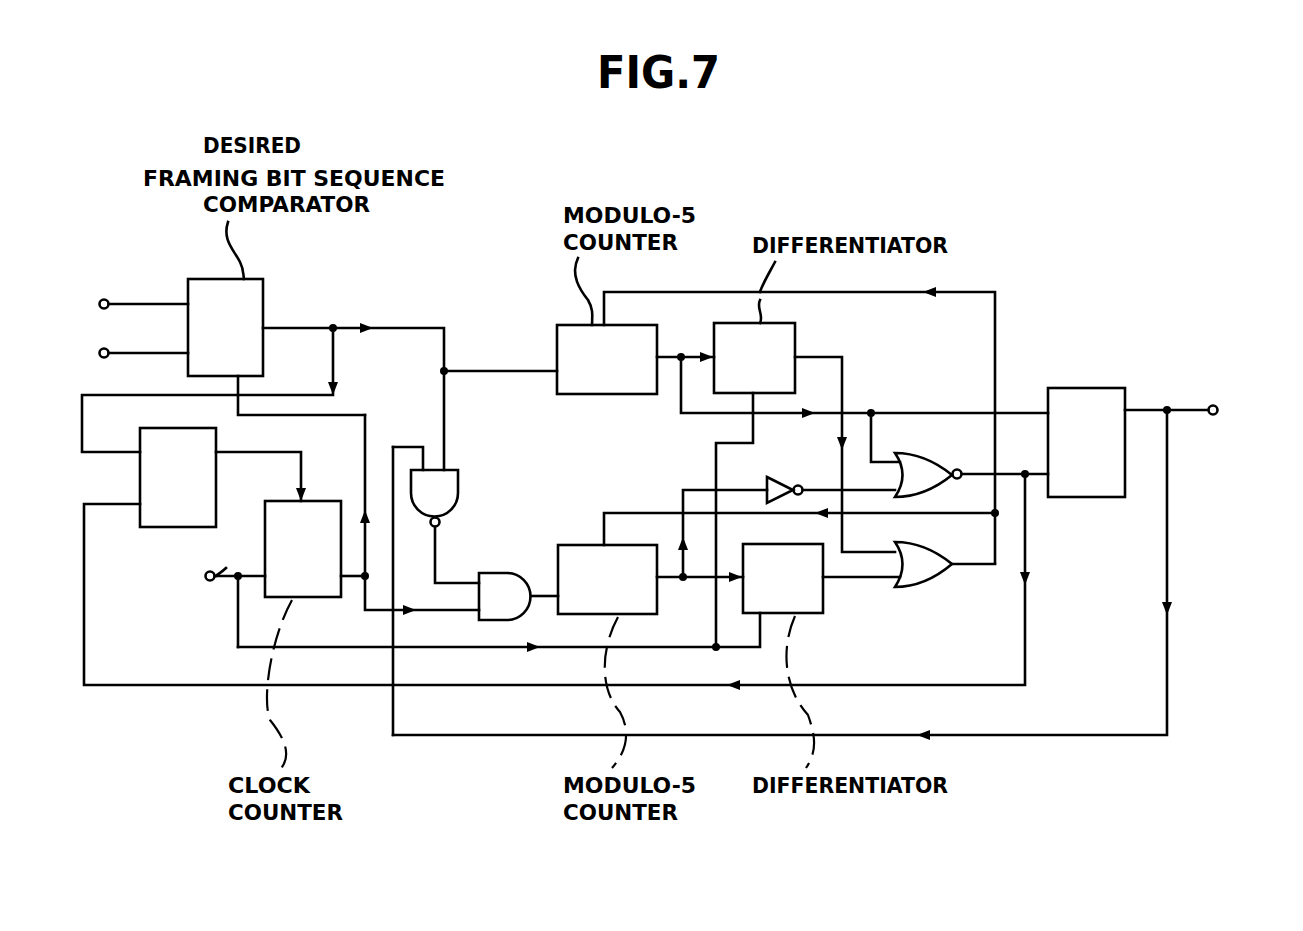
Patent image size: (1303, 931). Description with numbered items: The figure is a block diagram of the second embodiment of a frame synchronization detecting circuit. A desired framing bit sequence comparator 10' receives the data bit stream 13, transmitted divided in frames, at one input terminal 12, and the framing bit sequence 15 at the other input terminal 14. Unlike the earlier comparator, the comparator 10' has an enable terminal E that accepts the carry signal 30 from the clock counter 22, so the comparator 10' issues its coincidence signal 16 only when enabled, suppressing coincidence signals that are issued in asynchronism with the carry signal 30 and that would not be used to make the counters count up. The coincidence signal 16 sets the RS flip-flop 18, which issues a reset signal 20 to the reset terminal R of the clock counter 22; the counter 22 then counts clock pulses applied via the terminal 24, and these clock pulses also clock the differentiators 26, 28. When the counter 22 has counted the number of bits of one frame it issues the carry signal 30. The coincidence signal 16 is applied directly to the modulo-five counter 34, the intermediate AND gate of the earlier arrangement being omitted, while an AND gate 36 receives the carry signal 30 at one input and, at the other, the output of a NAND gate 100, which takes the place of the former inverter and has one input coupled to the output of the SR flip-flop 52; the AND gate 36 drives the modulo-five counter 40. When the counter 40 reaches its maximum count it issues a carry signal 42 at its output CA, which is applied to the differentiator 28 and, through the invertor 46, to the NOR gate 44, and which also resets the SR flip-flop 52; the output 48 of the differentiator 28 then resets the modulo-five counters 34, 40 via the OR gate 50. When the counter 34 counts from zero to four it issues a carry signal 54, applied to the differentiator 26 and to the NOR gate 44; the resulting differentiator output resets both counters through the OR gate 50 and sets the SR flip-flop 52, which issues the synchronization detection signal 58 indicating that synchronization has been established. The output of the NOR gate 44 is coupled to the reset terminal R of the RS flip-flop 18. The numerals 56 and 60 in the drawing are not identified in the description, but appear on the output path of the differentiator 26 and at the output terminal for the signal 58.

The desired framing bit sequence comparator 10' is at (253, 317).
The input terminal 12 is at (102, 298).
The data bit stream 13 is at (148, 304).
The input terminal 14 is at (102, 348).
The framing bit sequence 15 is at (140, 354).
The coincidence signal 16 is at (412, 327).
The RS flip-flop 18 is at (140, 487).
The reset signal 20 is at (250, 453).
The clock counter 22 is at (308, 501).
The terminal 24 is at (206, 577).
The differentiator 26 is at (797, 340).
The differentiator 28 is at (796, 615).
The carry signal 30 is at (368, 462).
The modulo-5 counter 34 is at (578, 395).
The AND gate 36 is at (518, 574).
The modulo-5 counter 40 is at (596, 544).
The carry signal 42 is at (682, 491).
The NOR gate 44 is at (904, 456).
The invertor 46 is at (782, 480).
The output 48 is at (840, 579).
The OR gate 50 is at (918, 587).
The SR flip-flop 52 is at (1086, 388).
The carry signal 54 is at (676, 356).
The differentiator output line 56 is at (843, 372).
The synchronization detection signal 58 is at (1140, 408).
The output terminal 60 is at (1218, 409).
The NAND gate 100 is at (460, 480).